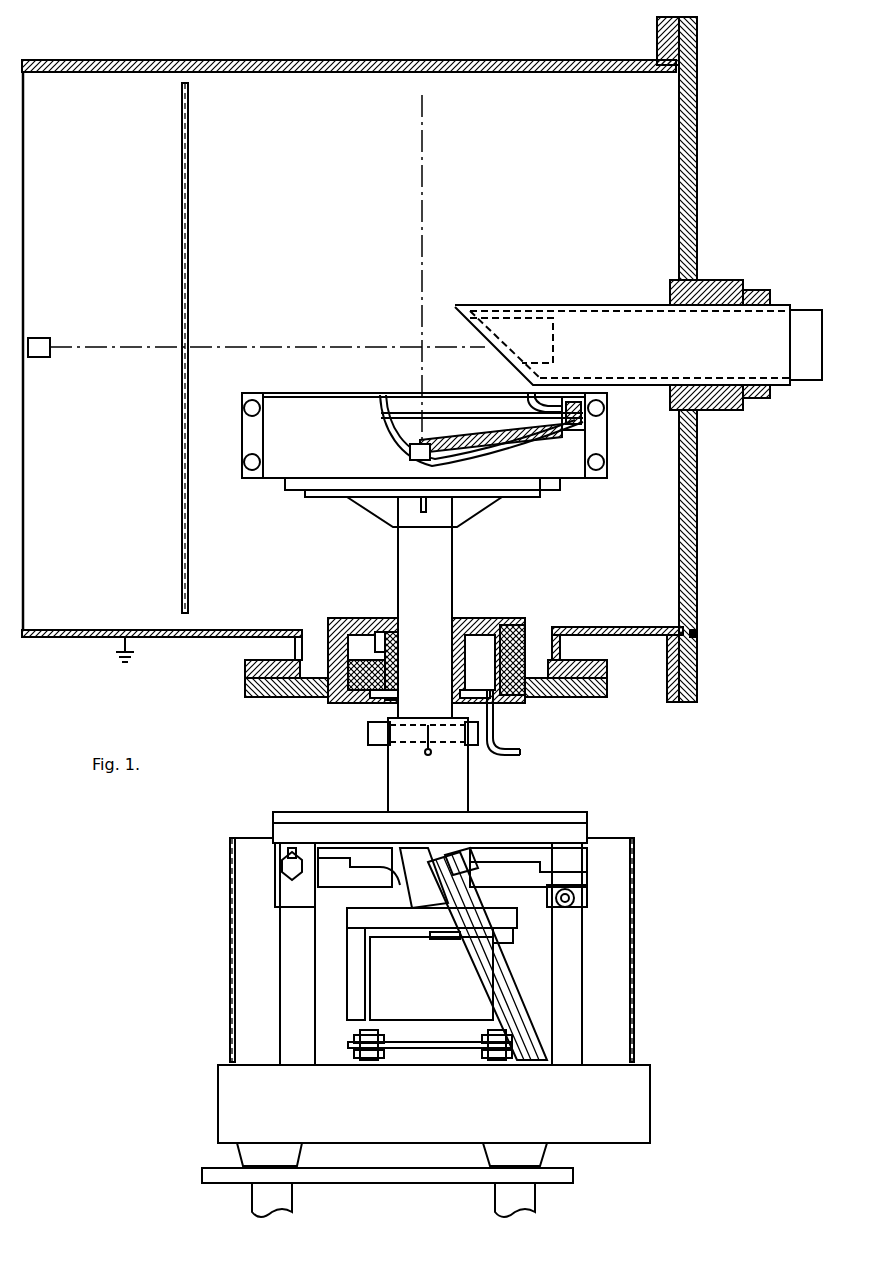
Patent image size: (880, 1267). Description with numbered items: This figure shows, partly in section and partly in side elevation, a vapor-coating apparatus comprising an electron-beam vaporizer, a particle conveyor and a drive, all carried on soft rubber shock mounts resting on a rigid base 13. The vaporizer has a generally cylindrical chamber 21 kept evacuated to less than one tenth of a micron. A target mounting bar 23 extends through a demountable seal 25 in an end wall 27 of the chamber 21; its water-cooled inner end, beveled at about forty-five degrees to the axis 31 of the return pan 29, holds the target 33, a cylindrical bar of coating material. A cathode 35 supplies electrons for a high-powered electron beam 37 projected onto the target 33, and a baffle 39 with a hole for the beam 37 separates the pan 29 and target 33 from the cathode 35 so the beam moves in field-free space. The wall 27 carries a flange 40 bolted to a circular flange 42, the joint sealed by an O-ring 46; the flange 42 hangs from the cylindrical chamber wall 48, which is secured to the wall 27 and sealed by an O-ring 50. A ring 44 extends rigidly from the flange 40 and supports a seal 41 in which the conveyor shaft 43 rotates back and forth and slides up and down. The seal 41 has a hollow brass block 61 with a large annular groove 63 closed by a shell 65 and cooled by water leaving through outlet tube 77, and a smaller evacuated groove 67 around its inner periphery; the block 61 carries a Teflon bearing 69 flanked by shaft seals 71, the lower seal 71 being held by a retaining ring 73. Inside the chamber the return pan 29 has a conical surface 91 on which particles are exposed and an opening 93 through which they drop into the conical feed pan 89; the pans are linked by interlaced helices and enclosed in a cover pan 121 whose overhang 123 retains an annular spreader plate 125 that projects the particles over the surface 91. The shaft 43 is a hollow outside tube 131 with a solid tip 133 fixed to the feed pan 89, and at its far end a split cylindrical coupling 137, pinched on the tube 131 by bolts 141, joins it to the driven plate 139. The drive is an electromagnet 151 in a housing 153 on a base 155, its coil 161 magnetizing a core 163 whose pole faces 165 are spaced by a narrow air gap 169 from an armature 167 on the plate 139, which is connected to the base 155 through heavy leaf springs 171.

The rigid base 13 is at (573, 1172).
The cylindrical chamber 21 is at (723, 446).
The target mounting bar 23 is at (655, 312).
The demountable seal 25 is at (711, 286).
The end wall 27 is at (697, 470).
The return pan 29 is at (498, 426).
The axis 31 is at (419, 240).
The target 33 is at (470, 347).
The cathode 35 is at (40, 337).
The electron beam 37 is at (371, 346).
The baffle 39 is at (185, 398).
The flange 40 is at (600, 693).
The seal 41 is at (500, 622).
The circular flange 42 is at (600, 665).
The shaft 43 is at (398, 543).
The ring 44 is at (520, 628).
The O-ring 46 is at (570, 690).
The cylindrical chamber wall 48 is at (591, 627).
The O-ring 50 is at (699, 634).
The hollow cylindrical block 61 is at (383, 630).
The annular groove 63 is at (357, 630).
The shell 65 is at (340, 648).
The groove 67 is at (462, 675).
The bearing 69 is at (396, 655).
The shaft seals 71 is at (398, 640).
The retaining ring 73 is at (458, 711).
The outlet tube 77 is at (496, 721).
The conical feed pan 89 is at (548, 487).
The conical surface 91 is at (466, 426).
The opening 93 is at (440, 439).
The cover pan 121 is at (290, 397).
The overhang 123 is at (558, 390).
The spreader plate 125 is at (535, 394).
The outside tube 131 is at (445, 541).
The solid tip 133 is at (438, 510).
The split cylindrical coupling 137 is at (388, 776).
The drive plate 139 is at (330, 812).
The bolts 141 is at (368, 738).
The electro-magnet 151 is at (222, 934).
The housing 153 is at (634, 964).
The base 155 is at (470, 1130).
The coil 161 is at (446, 1010).
The core 163 is at (432, 939).
The pole faces 165 is at (504, 947).
The armature 167 is at (352, 916).
The air gap 169 is at (530, 930).
The leaf springs 171 is at (290, 980).